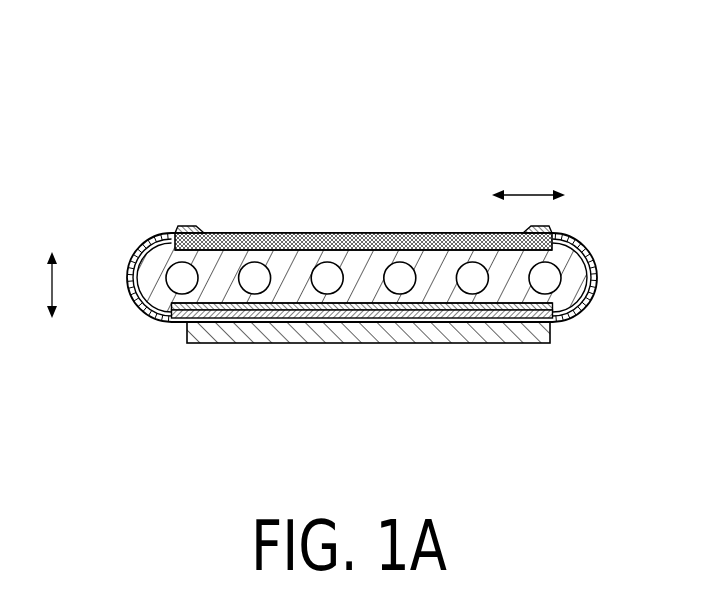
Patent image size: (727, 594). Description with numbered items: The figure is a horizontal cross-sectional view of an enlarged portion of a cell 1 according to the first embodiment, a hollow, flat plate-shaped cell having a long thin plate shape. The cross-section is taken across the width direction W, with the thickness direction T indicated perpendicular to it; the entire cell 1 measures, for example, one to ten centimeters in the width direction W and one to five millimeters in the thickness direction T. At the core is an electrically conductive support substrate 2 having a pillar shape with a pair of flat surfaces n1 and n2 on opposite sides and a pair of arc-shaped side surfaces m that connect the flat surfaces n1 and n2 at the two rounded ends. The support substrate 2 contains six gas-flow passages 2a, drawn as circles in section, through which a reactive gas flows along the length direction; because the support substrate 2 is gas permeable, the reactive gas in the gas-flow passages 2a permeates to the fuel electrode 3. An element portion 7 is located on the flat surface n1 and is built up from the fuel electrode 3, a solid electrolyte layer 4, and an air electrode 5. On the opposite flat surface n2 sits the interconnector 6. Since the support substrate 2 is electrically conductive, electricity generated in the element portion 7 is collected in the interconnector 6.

The cell 1 is at (372, 283).
The support substrate 2 is at (284, 298).
The gas-flow passages 2a is at (323, 258).
The fuel electrode 3 is at (397, 395).
The solid electrolyte layer 4 is at (486, 316).
The air electrode 5 is at (422, 312).
The interconnector 6 is at (369, 240).
The element portion 7 is at (362, 375).
The flat surface n1 is at (345, 310).
The flat surface n2 is at (416, 245).
The arc-shaped side surfaces m is at (127, 276).
The width direction W is at (528, 183).
The thickness direction T is at (42, 285).